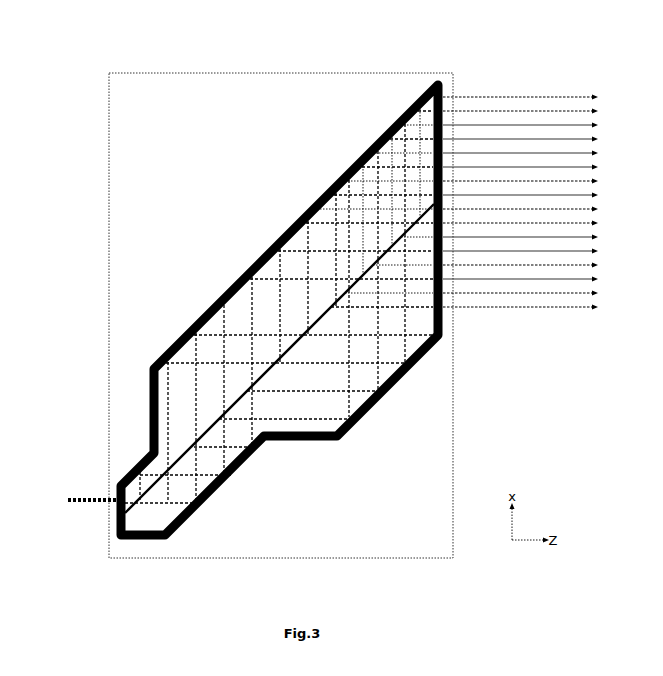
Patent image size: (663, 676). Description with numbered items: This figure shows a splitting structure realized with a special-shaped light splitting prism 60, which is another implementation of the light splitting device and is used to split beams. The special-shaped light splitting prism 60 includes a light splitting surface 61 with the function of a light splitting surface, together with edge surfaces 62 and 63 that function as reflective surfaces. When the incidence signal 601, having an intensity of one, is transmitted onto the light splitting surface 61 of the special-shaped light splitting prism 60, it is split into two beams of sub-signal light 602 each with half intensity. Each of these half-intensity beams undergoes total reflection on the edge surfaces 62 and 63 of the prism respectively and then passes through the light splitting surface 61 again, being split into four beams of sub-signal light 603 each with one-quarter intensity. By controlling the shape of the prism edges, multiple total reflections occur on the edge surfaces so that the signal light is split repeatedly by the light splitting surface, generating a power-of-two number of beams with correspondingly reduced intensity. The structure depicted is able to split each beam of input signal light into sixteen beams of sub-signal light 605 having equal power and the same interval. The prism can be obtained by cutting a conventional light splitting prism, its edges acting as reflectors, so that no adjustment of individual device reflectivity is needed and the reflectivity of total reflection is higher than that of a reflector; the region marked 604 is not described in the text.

The special-shaped light splitting prism 60 is at (262, 73).
The incidence signal 601 is at (88, 497).
The sub-signal light beam 602 is at (162, 500).
The light splitting surface 61 is at (125, 512).
The edge surface 62 is at (135, 468).
The edge surface 63 is at (213, 497).
The sub-signal light beam 603 is at (167, 420).
The bottom wall 604 is at (298, 418).
The sub-signal light beam 605 is at (523, 97).